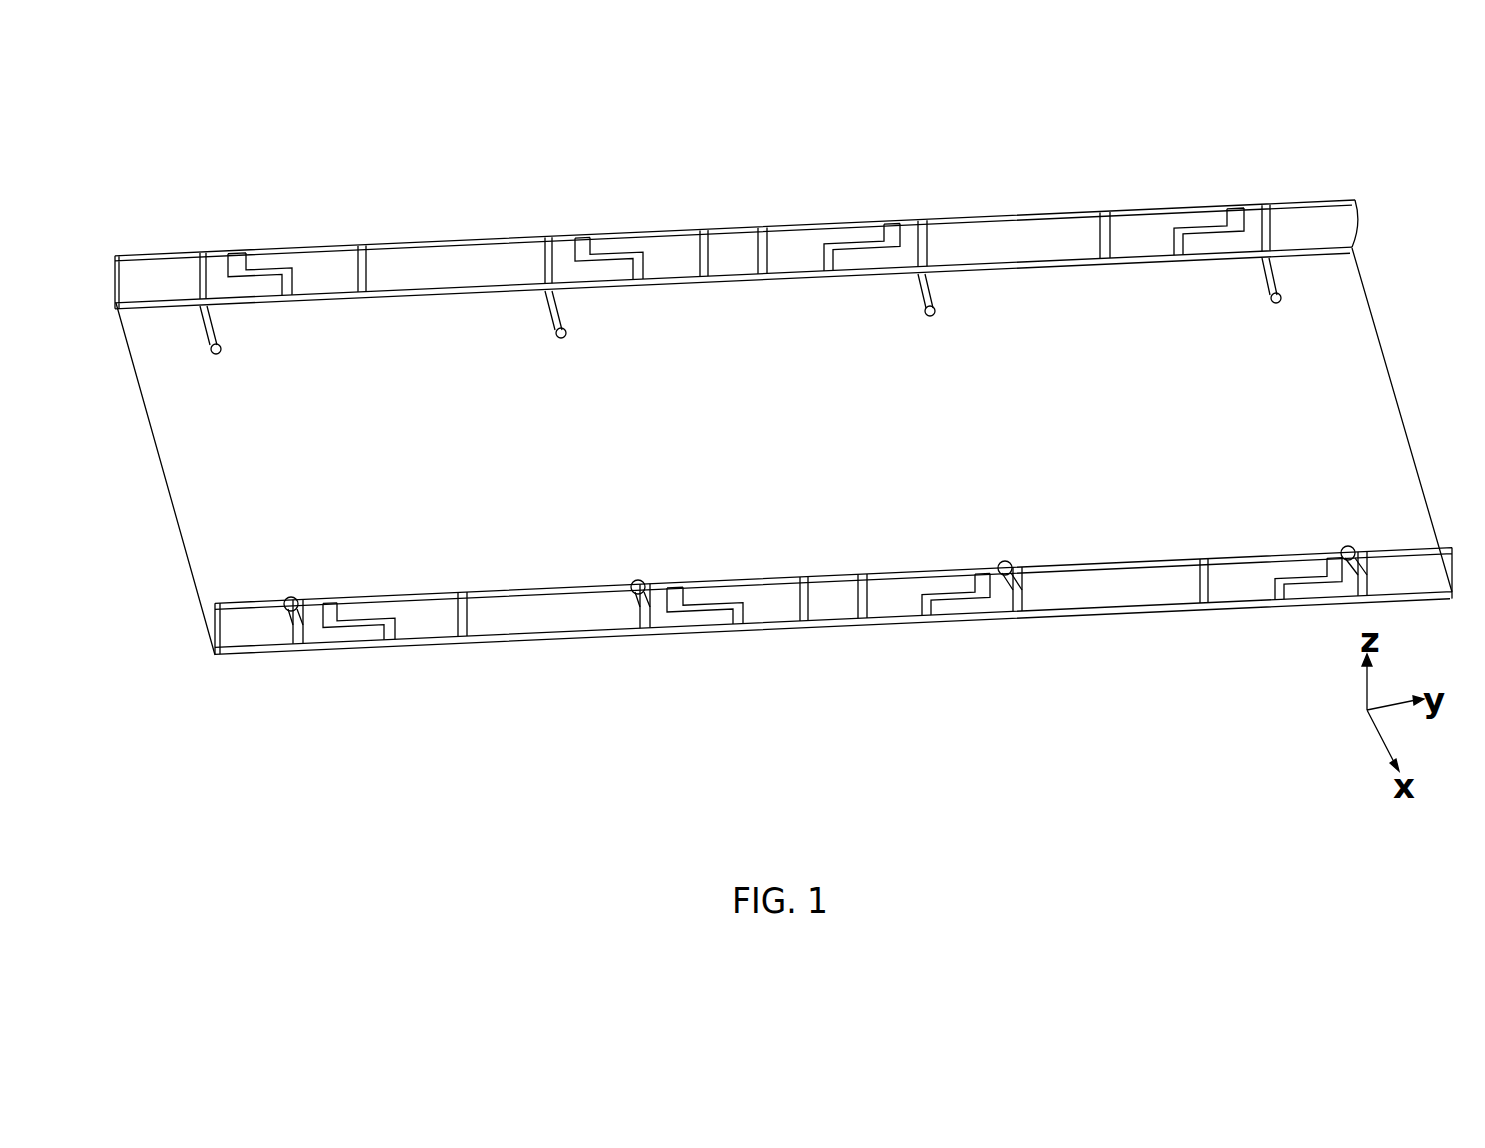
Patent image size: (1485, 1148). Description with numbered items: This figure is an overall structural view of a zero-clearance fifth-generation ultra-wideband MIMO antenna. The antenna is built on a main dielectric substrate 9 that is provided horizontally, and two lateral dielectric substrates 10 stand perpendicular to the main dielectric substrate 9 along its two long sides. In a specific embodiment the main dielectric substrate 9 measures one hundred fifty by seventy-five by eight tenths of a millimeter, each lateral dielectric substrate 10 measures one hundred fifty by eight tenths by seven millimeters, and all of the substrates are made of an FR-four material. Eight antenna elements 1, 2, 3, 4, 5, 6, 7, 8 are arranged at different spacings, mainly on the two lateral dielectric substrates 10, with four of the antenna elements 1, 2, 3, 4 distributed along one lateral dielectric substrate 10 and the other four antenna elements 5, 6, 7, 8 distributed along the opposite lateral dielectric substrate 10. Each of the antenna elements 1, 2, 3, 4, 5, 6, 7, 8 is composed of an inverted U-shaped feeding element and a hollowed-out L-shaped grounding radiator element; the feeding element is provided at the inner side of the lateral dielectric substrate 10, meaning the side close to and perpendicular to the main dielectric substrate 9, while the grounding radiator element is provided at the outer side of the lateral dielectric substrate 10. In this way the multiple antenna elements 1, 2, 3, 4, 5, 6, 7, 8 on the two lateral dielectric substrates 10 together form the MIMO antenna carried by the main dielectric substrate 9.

The antenna element 1 is at (1232, 207).
The antenna element 2 is at (892, 222).
The antenna element 3 is at (583, 233).
The antenna element 4 is at (233, 257).
The antenna element 5 is at (1283, 603).
The antenna element 6 is at (925, 622).
The antenna element 7 is at (733, 632).
The antenna element 8 is at (391, 640).
The main dielectric substrate 9 is at (1395, 410).
The lateral dielectric substrate 10 is at (215, 610).